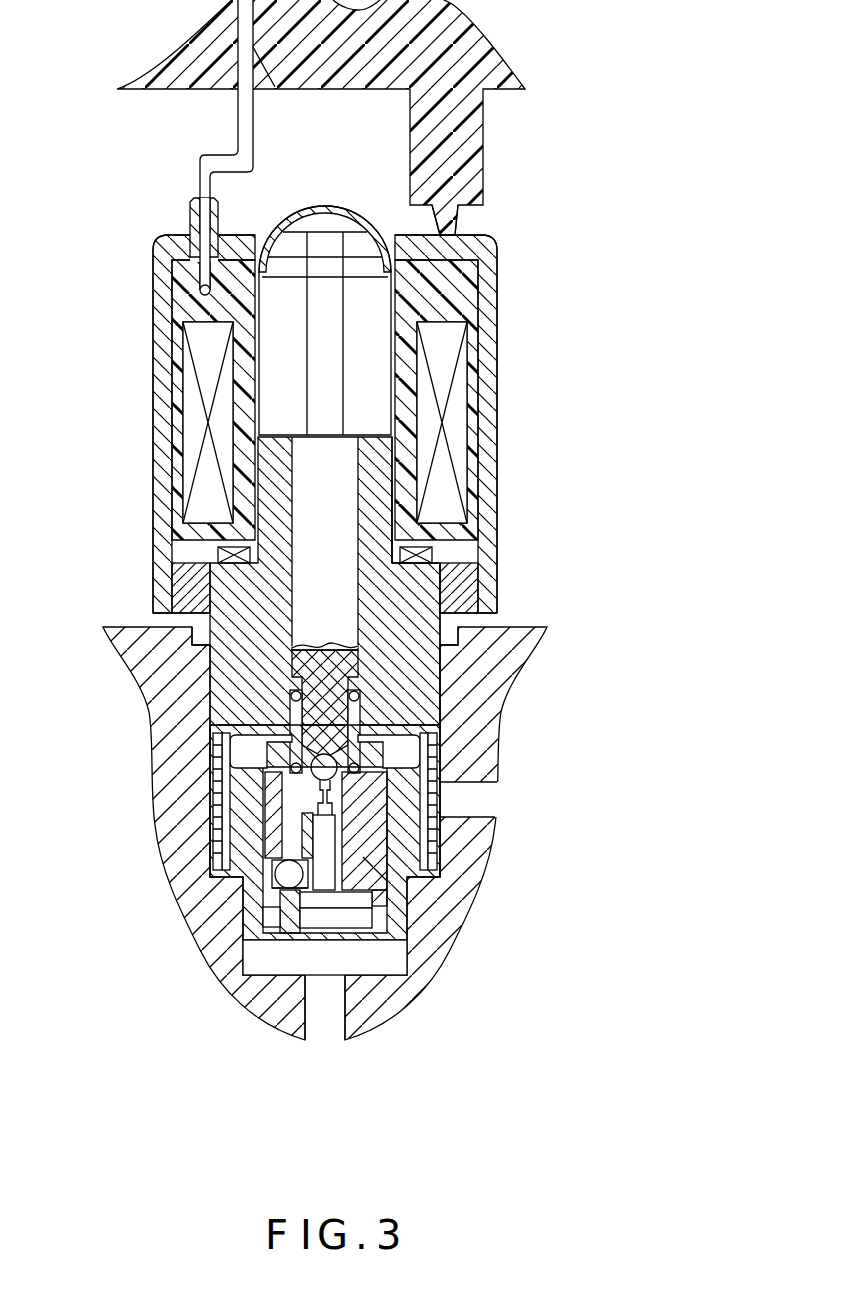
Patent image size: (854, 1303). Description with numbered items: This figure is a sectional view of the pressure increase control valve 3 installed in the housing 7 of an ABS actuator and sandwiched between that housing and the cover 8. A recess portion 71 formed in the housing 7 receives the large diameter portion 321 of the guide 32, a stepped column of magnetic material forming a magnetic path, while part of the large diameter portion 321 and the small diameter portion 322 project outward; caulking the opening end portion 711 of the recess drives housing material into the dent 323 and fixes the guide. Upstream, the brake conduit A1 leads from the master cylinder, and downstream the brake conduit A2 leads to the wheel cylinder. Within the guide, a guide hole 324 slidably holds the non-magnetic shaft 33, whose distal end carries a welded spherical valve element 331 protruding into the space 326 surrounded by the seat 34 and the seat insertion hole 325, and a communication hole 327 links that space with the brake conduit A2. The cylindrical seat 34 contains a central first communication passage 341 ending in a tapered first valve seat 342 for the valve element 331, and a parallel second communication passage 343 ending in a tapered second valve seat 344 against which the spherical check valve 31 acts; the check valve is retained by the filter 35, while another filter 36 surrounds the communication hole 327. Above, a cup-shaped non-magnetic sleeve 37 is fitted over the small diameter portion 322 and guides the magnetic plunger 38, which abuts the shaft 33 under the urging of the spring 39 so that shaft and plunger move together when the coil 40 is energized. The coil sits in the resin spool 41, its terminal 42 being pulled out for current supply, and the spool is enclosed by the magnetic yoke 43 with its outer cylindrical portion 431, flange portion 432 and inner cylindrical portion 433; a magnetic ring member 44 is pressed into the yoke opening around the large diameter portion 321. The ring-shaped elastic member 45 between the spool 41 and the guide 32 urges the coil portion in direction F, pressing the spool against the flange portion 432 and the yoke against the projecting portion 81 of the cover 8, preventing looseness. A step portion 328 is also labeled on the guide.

The pressure increase control valve 3 is at (512, 265).
The housing 7 is at (146, 665).
The cover 8 is at (476, 52).
The check valve 31 is at (222, 882).
The guide 32 is at (412, 600).
The shaft 33 is at (332, 618).
The seat 34 is at (336, 887).
The filter 35 is at (250, 956).
The filter 36 is at (220, 748).
The sleeve 37 is at (378, 230).
The plunger 38 is at (366, 318).
The spring 39 is at (290, 705).
The coil 40 is at (205, 417).
The spool 41 is at (180, 450).
The terminal 42 is at (197, 173).
The yoke 43 is at (148, 379).
The ring member 44 is at (190, 590).
The elastic member 45 is at (232, 553).
The recess portion 71 is at (222, 770).
The projecting portion 81 is at (437, 213).
The large diameter portion 321 is at (450, 664).
The small diameter portion 322 is at (375, 470).
The dent 323 is at (437, 688).
The guide hole 324 is at (396, 502).
The seat insertion hole 325 is at (362, 876).
The space 326 is at (303, 870).
The communication hole 327 is at (400, 752).
The step portion 328 is at (425, 578).
The valve element 331 is at (338, 768).
The first communication passage 341 is at (352, 917).
The first valve seat 342 is at (300, 903).
The second communication passage 343 is at (272, 862).
The second valve seat 344 is at (290, 886).
The outer cylindrical portion 431 is at (160, 353).
The flange portion 432 is at (187, 232).
The inner cylindrical portion 433 is at (195, 282).
The opening end portion 711 is at (197, 640).
The brake conduit A1 is at (305, 1022).
The brake conduit A2 is at (500, 797).
The direction F is at (534, 418).